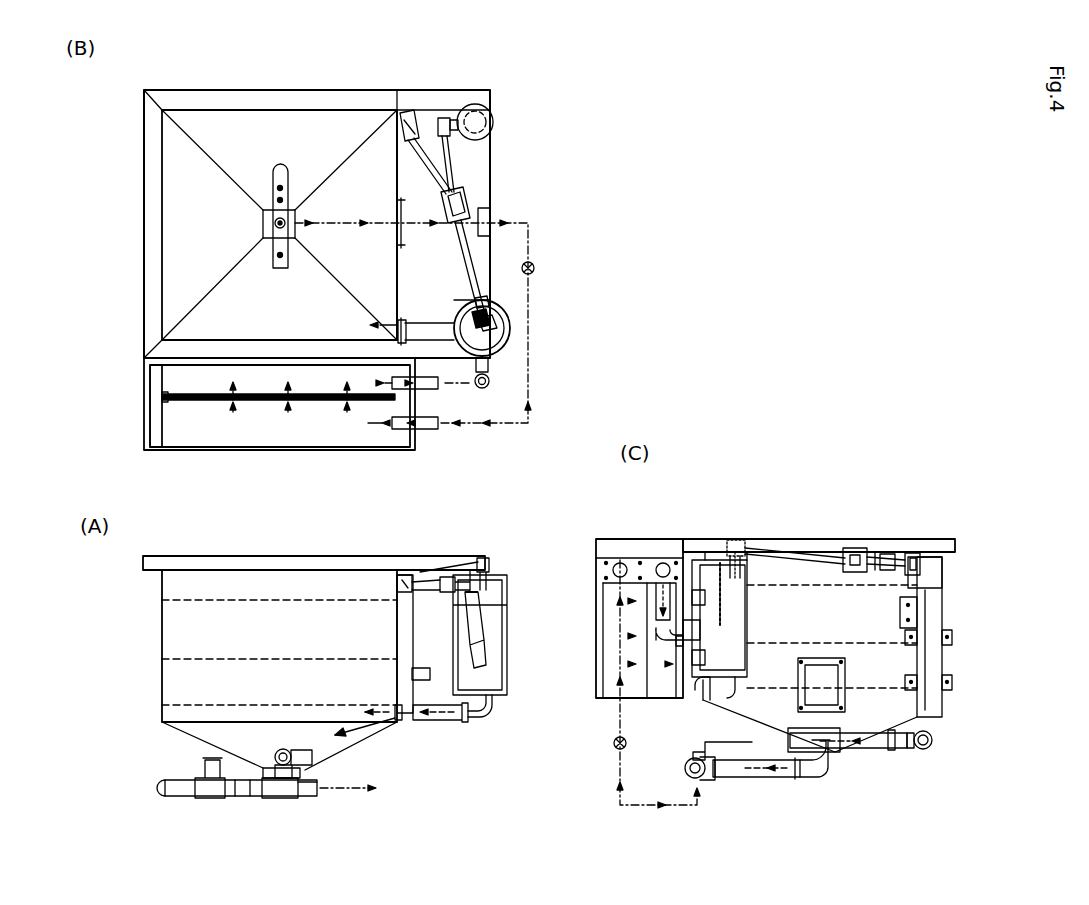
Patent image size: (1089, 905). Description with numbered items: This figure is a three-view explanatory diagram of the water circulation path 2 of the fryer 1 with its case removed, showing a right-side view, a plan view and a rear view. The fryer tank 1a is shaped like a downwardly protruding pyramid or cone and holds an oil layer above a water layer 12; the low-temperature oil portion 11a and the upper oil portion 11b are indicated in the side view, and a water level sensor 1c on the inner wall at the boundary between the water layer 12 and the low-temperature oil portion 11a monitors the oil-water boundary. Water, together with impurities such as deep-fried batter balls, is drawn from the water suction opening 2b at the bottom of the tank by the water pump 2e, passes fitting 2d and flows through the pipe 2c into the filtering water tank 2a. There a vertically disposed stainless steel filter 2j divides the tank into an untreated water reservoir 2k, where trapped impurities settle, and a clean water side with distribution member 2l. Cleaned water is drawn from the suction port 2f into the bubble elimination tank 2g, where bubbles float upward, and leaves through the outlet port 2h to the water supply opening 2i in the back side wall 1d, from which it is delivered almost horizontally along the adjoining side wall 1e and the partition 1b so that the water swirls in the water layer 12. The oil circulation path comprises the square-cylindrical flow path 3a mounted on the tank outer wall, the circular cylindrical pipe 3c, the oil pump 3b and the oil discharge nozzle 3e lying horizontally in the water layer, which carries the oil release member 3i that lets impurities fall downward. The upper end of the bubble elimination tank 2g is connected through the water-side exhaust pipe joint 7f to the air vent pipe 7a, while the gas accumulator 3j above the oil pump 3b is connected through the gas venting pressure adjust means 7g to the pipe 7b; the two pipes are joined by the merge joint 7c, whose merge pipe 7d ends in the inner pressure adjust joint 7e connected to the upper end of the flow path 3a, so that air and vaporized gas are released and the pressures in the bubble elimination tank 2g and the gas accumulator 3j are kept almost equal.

The fryer 1 is at (149, 80).
The fryer tank 1a is at (175, 135).
The partition wall 1b is at (437, 86).
The water level sensor 1c is at (470, 213).
The side wall 1d is at (397, 145).
The adjoining side wall 1e is at (178, 330).
The water circulation path 2 is at (533, 236).
The filtering water tank 2a is at (255, 450).
The water suction opening 2b is at (268, 250).
The pipe 2c is at (533, 395).
The pump 2d is at (205, 796).
The water pump 2e is at (535, 271).
The suction port 2f is at (385, 390).
The bubble elimination tank 2g is at (512, 330).
The outlet port 2h is at (490, 698).
The water supply opening 2i is at (388, 708).
The filter 2j is at (215, 405).
The untreated water reservoir 2k is at (180, 455).
The distribution bar 2l is at (170, 385).
The square-cylindrical flow path 3a is at (408, 135).
The oil pump 3b is at (493, 122).
The circular cylindrical pipe 3c is at (428, 680).
The oil discharge nozzle 3e is at (275, 172).
The oil release member 3i is at (262, 220).
The gas accumulator 3j is at (945, 582).
The air vent pipe 7a is at (478, 265).
The pipe 7b is at (452, 160).
The merge joint 7c is at (462, 200).
The merge pipe 7d is at (446, 115).
The inner pressure adjust joint 7e is at (405, 108).
The water-side exhaust pipe joint 7f is at (505, 310).
The gas venting pressure adjust means 7g is at (455, 122).
The low-temperature oil portion 11a is at (256, 696).
The upper liquid level 11b is at (256, 641).
The water layer 12 is at (268, 762).